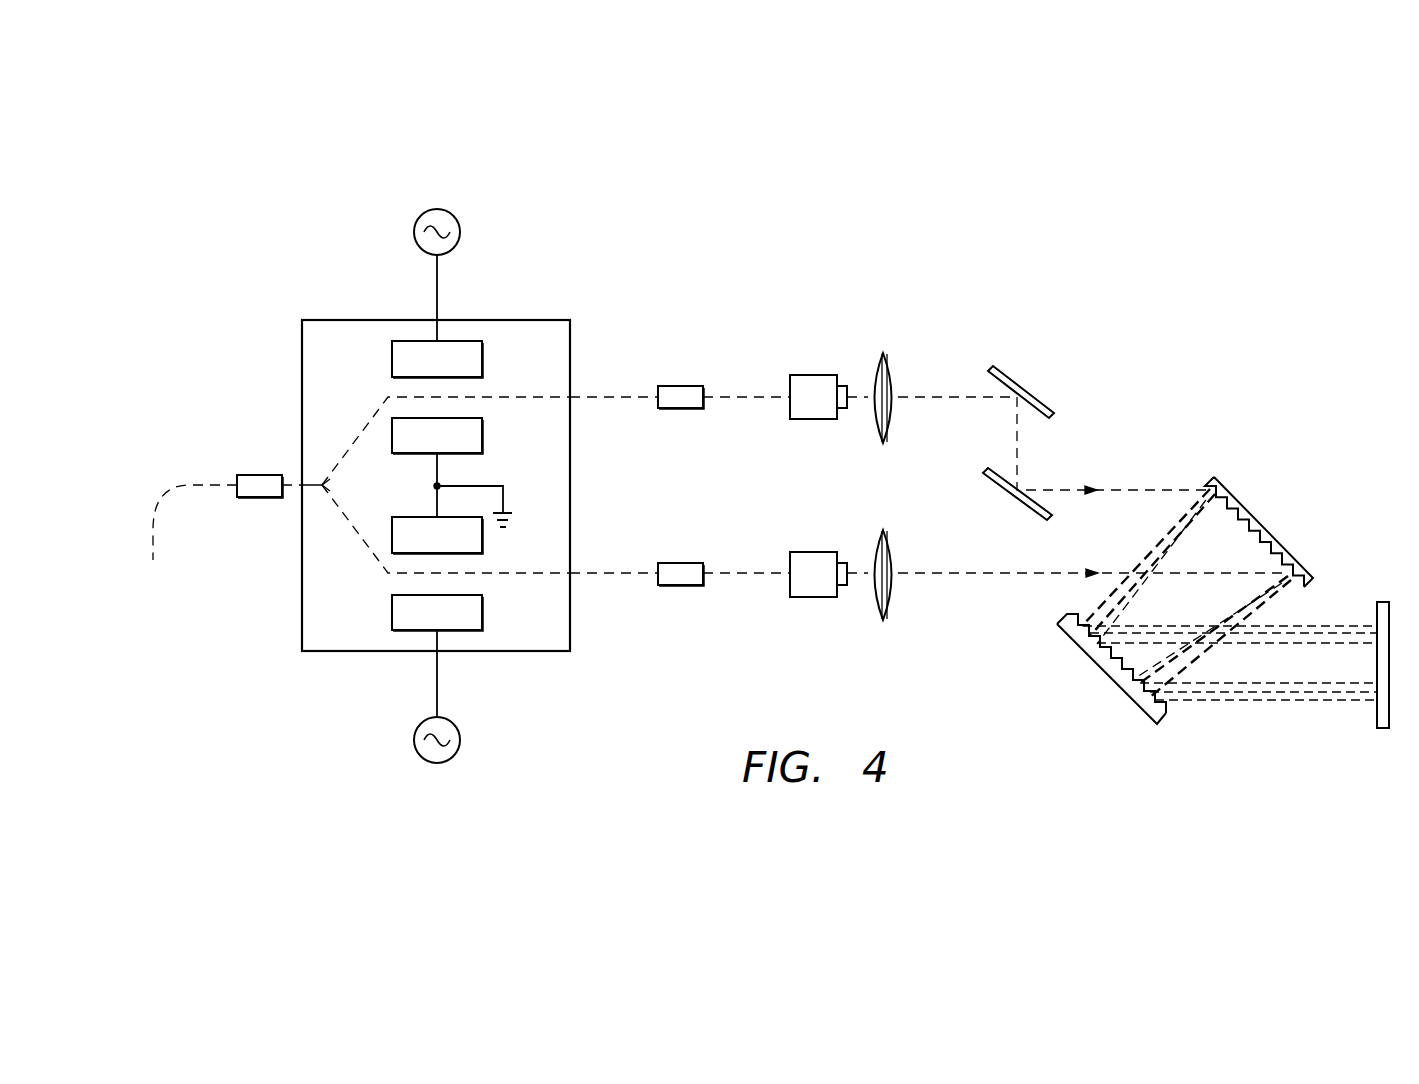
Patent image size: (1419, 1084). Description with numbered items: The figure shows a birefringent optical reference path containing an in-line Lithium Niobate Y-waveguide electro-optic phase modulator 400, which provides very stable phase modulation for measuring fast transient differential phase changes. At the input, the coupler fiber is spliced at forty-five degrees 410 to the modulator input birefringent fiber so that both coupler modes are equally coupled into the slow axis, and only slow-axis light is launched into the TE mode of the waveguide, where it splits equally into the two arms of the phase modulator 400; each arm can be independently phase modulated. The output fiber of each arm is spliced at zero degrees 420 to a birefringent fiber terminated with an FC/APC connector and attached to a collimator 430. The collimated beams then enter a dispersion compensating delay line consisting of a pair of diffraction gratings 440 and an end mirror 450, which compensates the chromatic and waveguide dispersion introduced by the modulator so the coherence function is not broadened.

The electro-optic phase modulator 400 is at (358, 318).
The 45° splice 410 is at (258, 472).
The 0° splice 420 is at (681, 385).
The collimator 430 is at (883, 352).
The diffraction grating 440 is at (1268, 528).
The end mirror 450 is at (1386, 730).